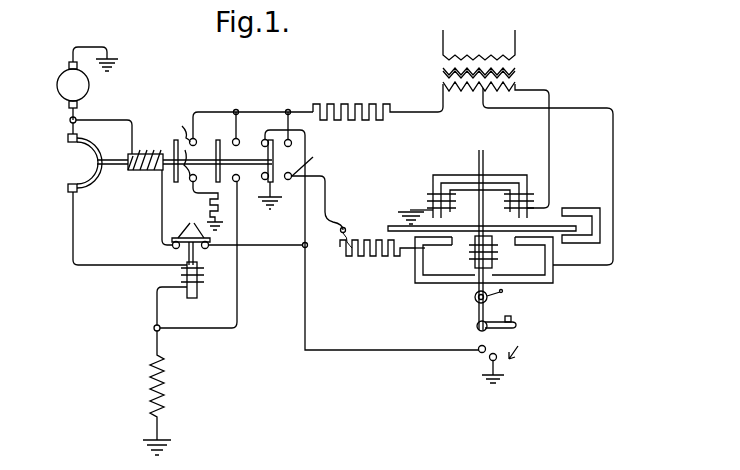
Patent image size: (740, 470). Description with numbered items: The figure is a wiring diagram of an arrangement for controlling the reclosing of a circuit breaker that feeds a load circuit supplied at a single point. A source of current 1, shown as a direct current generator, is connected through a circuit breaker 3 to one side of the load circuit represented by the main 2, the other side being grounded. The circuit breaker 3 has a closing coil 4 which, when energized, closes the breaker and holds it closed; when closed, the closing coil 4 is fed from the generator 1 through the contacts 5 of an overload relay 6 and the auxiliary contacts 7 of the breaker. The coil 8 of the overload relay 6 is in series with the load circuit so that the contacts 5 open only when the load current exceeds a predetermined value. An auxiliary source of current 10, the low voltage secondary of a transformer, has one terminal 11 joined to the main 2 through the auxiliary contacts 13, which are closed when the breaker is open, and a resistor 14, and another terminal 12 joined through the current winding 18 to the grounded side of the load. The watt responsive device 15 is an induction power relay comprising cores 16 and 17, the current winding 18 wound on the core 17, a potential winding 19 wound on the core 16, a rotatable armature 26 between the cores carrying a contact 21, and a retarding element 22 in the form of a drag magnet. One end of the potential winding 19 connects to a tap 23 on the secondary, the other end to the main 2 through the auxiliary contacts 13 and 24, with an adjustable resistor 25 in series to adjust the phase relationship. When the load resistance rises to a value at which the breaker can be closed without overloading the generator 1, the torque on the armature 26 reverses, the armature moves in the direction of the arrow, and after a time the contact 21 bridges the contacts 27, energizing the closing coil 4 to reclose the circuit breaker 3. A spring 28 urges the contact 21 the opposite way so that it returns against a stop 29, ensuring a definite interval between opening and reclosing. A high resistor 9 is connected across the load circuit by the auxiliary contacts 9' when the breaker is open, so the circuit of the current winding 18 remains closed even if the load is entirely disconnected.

The source of current 1 is at (57, 85).
The main 2 is at (152, 339).
The circuit breaker 3 is at (81, 154).
The closing coil 4 is at (148, 152).
The contacts of overload relay 5 is at (237, 228).
The overload relay 6 is at (171, 295).
The auxiliary contacts of circuit breaker 7 is at (265, 148).
The coil of overload relay 8 is at (200, 272).
The high resistor 9 is at (196, 206).
The auxiliary contacts 9' is at (243, 141).
The auxiliary source of current 10 is at (479, 79).
The terminal 11 is at (441, 89).
The terminal 12 is at (518, 91).
The auxiliary contacts of circuit breaker 13 is at (233, 140).
The resistor 14 is at (378, 98).
The watt responsive device 15 is at (462, 195).
The core 16 is at (423, 284).
The core 17 is at (490, 178).
The current winding 18 is at (512, 203).
The potential winding 19 is at (474, 255).
The contact 21 is at (518, 327).
The retarding element 22 is at (578, 210).
The tap 23 is at (485, 92).
The auxiliary contacts of circuit breaker 24 is at (292, 145).
The adjustable resistor 25 is at (370, 262).
The rotatable armature 26 is at (396, 220).
The contacts 27 is at (489, 361).
The spring 28 is at (475, 300).
The stop 29 is at (509, 316).